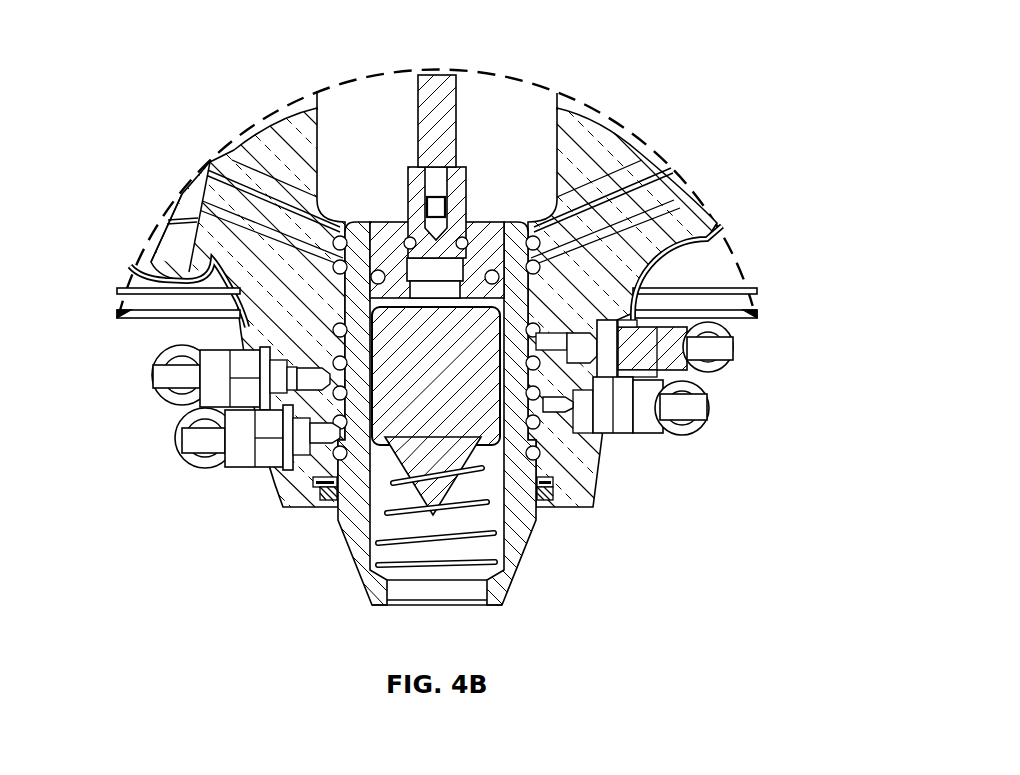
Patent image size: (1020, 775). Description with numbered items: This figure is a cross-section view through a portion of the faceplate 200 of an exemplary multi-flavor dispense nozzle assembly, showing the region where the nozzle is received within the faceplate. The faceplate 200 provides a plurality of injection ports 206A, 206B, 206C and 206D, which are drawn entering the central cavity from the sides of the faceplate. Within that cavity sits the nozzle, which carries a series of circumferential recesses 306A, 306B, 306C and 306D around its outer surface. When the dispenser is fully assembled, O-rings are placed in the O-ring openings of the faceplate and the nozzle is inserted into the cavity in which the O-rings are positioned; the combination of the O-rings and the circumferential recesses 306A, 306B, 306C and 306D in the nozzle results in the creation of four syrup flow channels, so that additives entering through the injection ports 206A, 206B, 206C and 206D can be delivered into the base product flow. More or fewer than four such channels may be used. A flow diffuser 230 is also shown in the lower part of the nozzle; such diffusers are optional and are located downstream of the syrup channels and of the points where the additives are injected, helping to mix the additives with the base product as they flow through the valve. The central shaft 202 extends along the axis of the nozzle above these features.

The faceplate 200 is at (606, 158).
The shaft 202 is at (452, 147).
The injection port 206A is at (648, 273).
The injection port 206B is at (710, 410).
The injection port 206C is at (330, 372).
The injection port 206D is at (330, 440).
The flow diffuser 230 is at (392, 483).
The circumferential recess 306A is at (527, 347).
The circumferential recess 306B is at (352, 383).
The circumferential recess 306C is at (583, 435).
The circumferential recess 306D is at (343, 440).